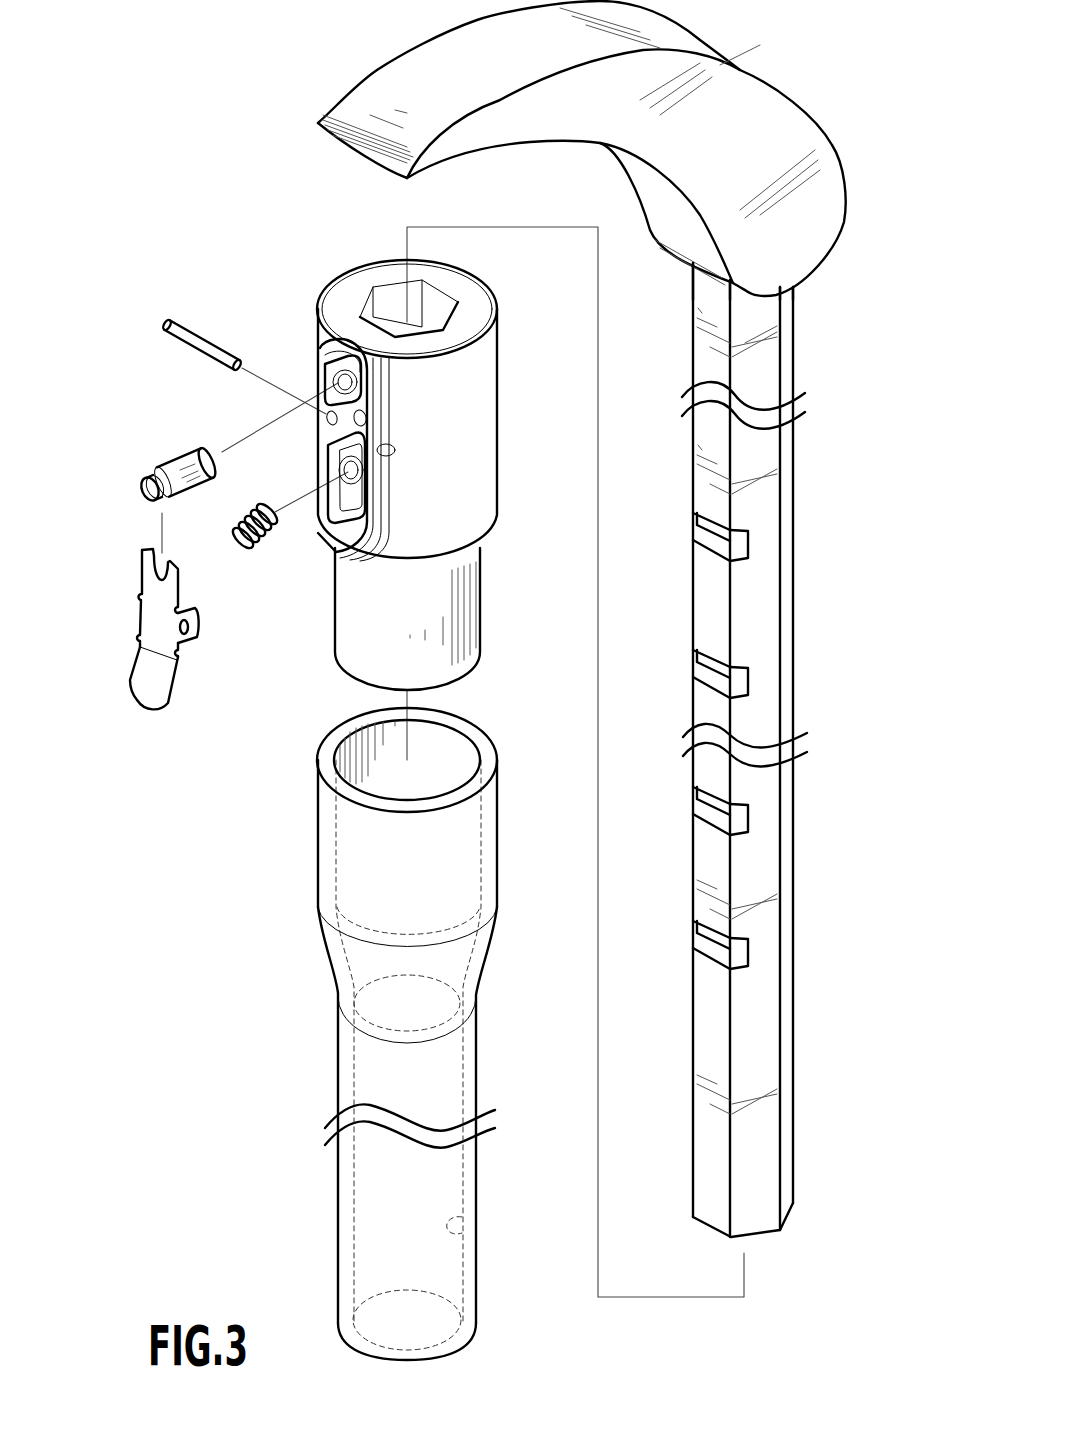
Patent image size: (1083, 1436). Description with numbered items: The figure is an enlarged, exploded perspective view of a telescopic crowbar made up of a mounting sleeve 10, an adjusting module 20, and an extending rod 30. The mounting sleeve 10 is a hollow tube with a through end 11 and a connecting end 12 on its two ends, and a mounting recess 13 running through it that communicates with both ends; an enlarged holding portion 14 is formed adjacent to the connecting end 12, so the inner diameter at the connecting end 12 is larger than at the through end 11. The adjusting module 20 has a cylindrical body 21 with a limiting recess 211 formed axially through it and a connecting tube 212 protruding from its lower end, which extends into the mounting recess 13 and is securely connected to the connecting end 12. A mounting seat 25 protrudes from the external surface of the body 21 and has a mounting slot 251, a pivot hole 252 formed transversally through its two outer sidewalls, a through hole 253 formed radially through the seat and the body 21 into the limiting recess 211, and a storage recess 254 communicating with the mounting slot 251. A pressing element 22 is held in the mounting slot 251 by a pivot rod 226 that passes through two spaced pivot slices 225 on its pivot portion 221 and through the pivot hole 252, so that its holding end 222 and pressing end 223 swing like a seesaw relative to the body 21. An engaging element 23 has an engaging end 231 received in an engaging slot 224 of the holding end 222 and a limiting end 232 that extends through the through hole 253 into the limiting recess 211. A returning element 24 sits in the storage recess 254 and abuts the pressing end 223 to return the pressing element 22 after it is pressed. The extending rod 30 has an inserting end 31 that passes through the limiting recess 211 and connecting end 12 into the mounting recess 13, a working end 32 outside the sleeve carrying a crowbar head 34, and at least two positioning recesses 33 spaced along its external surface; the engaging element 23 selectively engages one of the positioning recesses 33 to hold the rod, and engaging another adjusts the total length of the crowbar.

The mounting sleeve 10 is at (308, 1067).
The through end 11 is at (465, 1345).
The connecting end 12 is at (487, 758).
The mounting recess 13 is at (462, 1217).
The holding portion 14 is at (475, 967).
The adjusting module 20 is at (120, 350).
The body 21 is at (494, 373).
The limiting recess 211 is at (388, 297).
The connecting tube 212 is at (463, 602).
The pressing element 22 is at (174, 622).
The pivot portion 221 is at (202, 615).
The holding end 222 is at (147, 585).
The pressing end 223 is at (148, 697).
The engaging slot 224 is at (158, 548).
The pivot slices 225 is at (183, 640).
The pivot rod 226 is at (183, 332).
The engaging element 23 is at (138, 442).
The engaging end 231 is at (145, 490).
The limiting end 232 is at (212, 448).
The returning element 24 is at (265, 533).
The mounting seat 25 is at (384, 508).
The mounting slot 251 is at (358, 428).
The pivot hole 252 is at (387, 457).
The through hole 253 is at (328, 374).
The storage recess 254 is at (352, 465).
The extending rod 30 is at (820, 614).
The inserting end 31 is at (762, 1233).
The working end 32 is at (785, 288).
The positioning recesses 33 is at (703, 536).
The crowbar head 34 is at (730, 102).